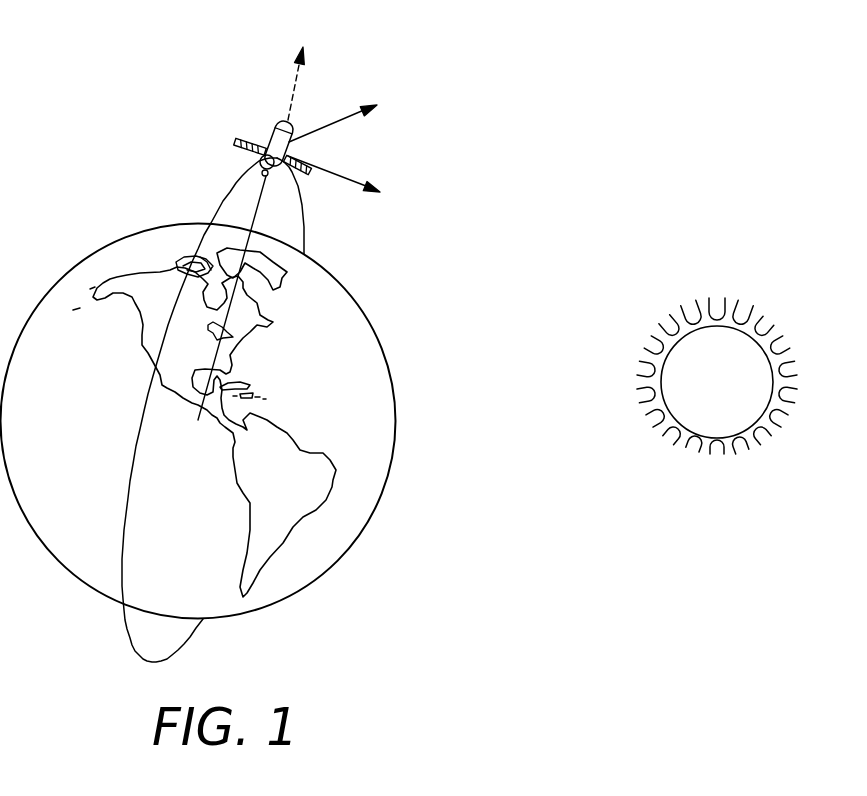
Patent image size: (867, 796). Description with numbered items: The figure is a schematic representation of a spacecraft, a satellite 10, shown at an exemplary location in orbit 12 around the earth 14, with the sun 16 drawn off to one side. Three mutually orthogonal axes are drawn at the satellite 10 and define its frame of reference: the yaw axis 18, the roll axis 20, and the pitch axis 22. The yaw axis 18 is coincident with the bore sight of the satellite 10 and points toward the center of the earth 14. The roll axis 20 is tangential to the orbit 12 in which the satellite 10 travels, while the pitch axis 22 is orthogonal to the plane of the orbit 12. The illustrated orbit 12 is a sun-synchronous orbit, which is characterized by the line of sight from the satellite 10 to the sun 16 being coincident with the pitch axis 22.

The satellite 10 is at (268, 129).
The orbit 12 is at (228, 193).
The earth 14 is at (396, 430).
The sun 16 is at (717, 376).
The yaw axis 18 is at (299, 214).
The roll axis 20 is at (408, 118).
The pitch axis 22 is at (413, 183).